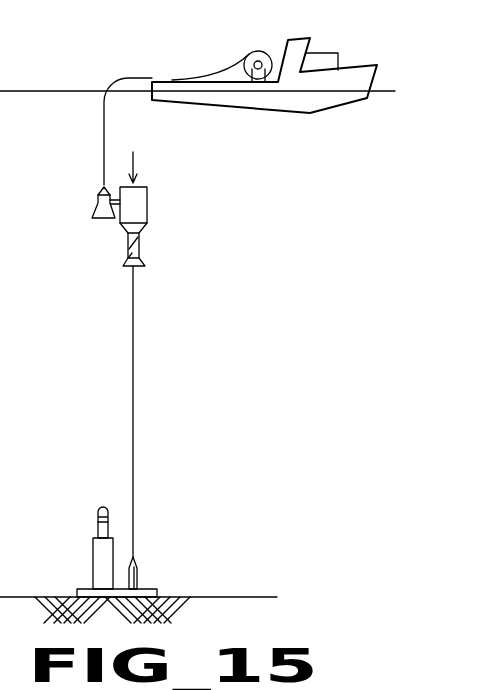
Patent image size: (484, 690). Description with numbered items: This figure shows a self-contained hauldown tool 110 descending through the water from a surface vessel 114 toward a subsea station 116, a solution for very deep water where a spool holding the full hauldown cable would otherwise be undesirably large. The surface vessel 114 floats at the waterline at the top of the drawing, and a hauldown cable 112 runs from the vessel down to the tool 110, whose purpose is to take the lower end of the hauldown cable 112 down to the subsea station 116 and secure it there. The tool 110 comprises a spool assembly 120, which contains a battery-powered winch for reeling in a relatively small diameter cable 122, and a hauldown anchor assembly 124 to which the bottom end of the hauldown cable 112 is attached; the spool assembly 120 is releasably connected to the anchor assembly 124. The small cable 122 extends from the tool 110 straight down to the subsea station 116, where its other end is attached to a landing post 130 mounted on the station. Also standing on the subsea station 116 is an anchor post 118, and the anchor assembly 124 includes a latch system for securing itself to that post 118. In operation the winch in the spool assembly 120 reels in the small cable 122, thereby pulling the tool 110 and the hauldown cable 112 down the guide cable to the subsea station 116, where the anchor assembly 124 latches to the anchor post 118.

The self-contained hauldown tool 110 is at (184, 223).
The hauldown cable 112 is at (102, 140).
The surface vessel 114 is at (298, 50).
The subsea station 116 is at (84, 573).
The anchor post 118 is at (100, 527).
The spool assembly 120 is at (147, 191).
The small diameter cable 122 is at (133, 356).
The hauldown anchor assembly 124 is at (97, 200).
The landing post 130 is at (138, 568).